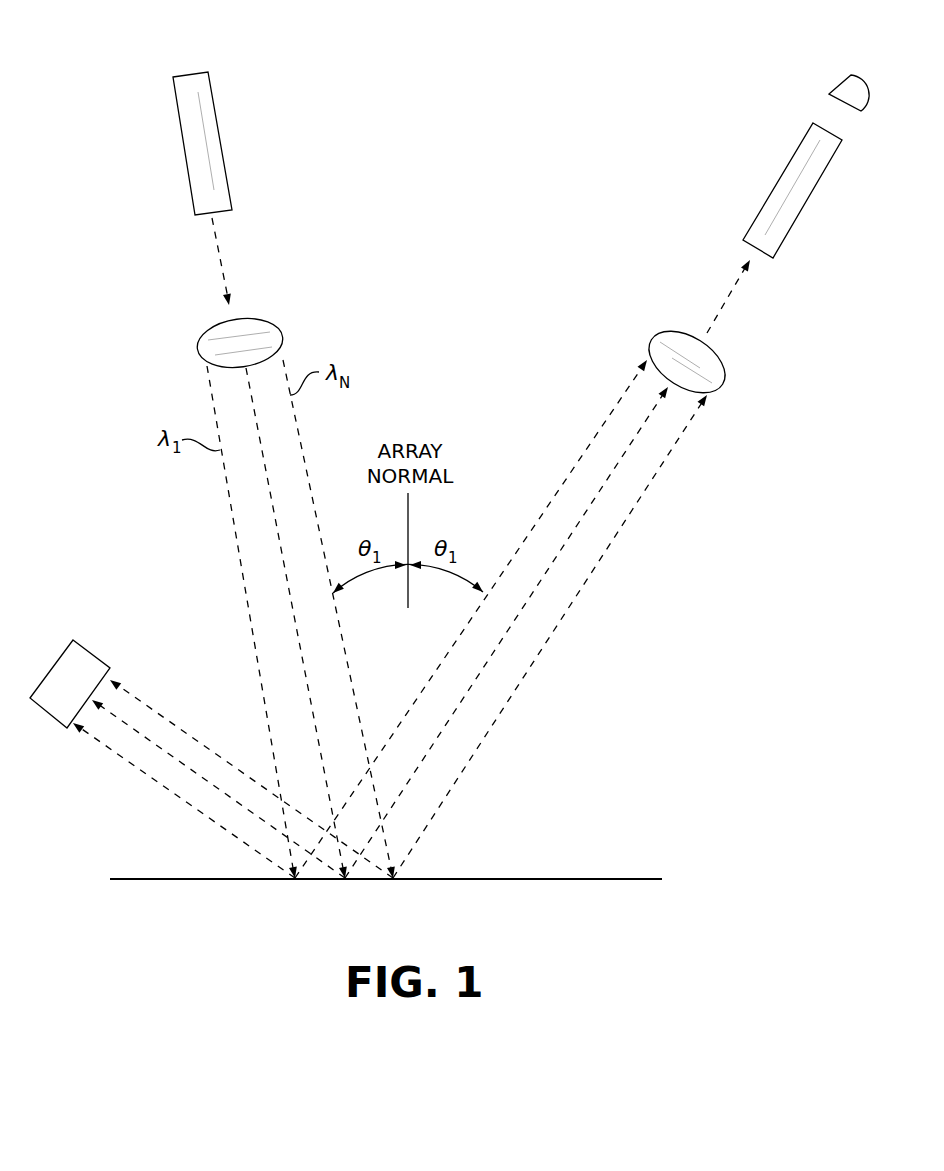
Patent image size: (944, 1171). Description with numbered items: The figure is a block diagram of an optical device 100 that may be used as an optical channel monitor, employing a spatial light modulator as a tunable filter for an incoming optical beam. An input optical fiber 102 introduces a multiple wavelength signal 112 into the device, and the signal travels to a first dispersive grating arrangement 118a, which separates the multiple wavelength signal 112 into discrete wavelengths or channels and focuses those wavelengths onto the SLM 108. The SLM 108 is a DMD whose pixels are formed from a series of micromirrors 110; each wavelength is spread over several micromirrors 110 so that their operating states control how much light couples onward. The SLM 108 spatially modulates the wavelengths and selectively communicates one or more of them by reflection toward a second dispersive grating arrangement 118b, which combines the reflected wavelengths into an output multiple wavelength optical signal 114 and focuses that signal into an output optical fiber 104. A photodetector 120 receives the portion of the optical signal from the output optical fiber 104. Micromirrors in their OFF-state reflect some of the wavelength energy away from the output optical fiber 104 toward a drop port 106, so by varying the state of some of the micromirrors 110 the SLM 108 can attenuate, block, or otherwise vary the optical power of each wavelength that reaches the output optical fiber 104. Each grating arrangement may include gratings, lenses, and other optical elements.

The optical device 100 is at (574, 70).
The input optical fiber 102 is at (220, 142).
The output optical fiber 104 is at (773, 193).
The drop port 106 is at (92, 655).
The SLM 108 is at (578, 880).
The micromirrors 110 is at (510, 878).
The multiple wavelength signal 112 is at (222, 258).
The output multiple wavelength optical signal 114 is at (730, 300).
The first dispersive grating arrangement 118a is at (255, 317).
The second dispersive grating arrangement 118b is at (673, 330).
The photodetector 120 is at (853, 77).